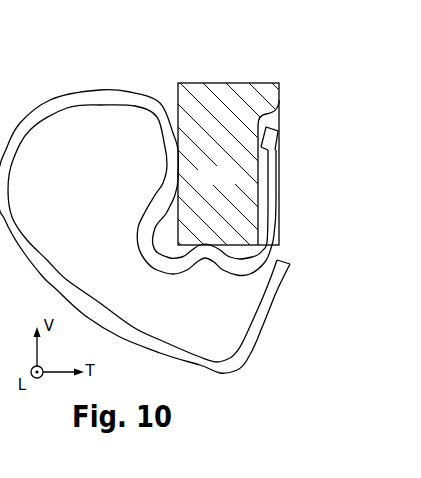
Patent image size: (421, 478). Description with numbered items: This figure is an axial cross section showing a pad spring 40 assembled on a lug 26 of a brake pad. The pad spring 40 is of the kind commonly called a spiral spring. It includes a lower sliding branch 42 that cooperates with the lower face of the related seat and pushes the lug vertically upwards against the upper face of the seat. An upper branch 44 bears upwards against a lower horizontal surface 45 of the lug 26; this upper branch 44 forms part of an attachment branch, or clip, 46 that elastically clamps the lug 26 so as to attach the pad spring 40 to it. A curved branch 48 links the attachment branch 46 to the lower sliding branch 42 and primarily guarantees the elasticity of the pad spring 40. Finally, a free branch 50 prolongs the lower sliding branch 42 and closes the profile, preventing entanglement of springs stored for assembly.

The lug 26 is at (220, 164).
The pad spring 40 is at (135, 88).
The lower sliding branch 42 is at (234, 372).
The upper branch 44 is at (213, 253).
The lower horizontal surface 45 is at (238, 244).
The attachment branch 46 is at (260, 149).
The curved branch 48 is at (30, 255).
The free branch 50 is at (270, 313).